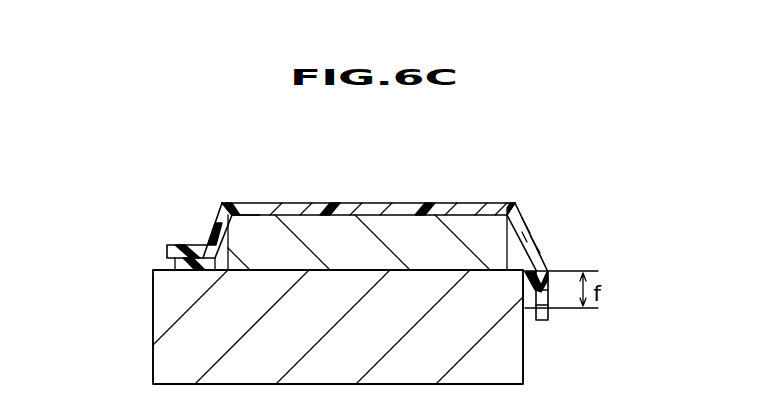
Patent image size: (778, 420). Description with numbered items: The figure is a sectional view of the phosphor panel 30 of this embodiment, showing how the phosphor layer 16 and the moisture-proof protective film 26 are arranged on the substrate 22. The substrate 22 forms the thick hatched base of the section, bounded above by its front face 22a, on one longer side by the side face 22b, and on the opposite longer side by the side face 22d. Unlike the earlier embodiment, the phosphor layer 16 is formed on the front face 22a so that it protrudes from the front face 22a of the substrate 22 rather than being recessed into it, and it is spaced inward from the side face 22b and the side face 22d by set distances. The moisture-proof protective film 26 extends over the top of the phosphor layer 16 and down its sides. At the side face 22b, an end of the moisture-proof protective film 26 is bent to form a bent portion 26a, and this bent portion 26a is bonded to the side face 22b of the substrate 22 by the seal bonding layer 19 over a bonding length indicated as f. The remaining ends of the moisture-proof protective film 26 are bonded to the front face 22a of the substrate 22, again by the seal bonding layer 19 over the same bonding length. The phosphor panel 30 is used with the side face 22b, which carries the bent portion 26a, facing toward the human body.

The phosphor layer 16 is at (313, 218).
The seal bonding layer 19 is at (183, 272).
The substrate 22 is at (170, 374).
The front face 22a is at (243, 218).
The side face 22b is at (523, 370).
The side face 22d is at (153, 343).
The moisture-proof protective film 26 is at (383, 206).
The bent portion 26a is at (180, 245).
The phosphor panel 30 is at (430, 163).